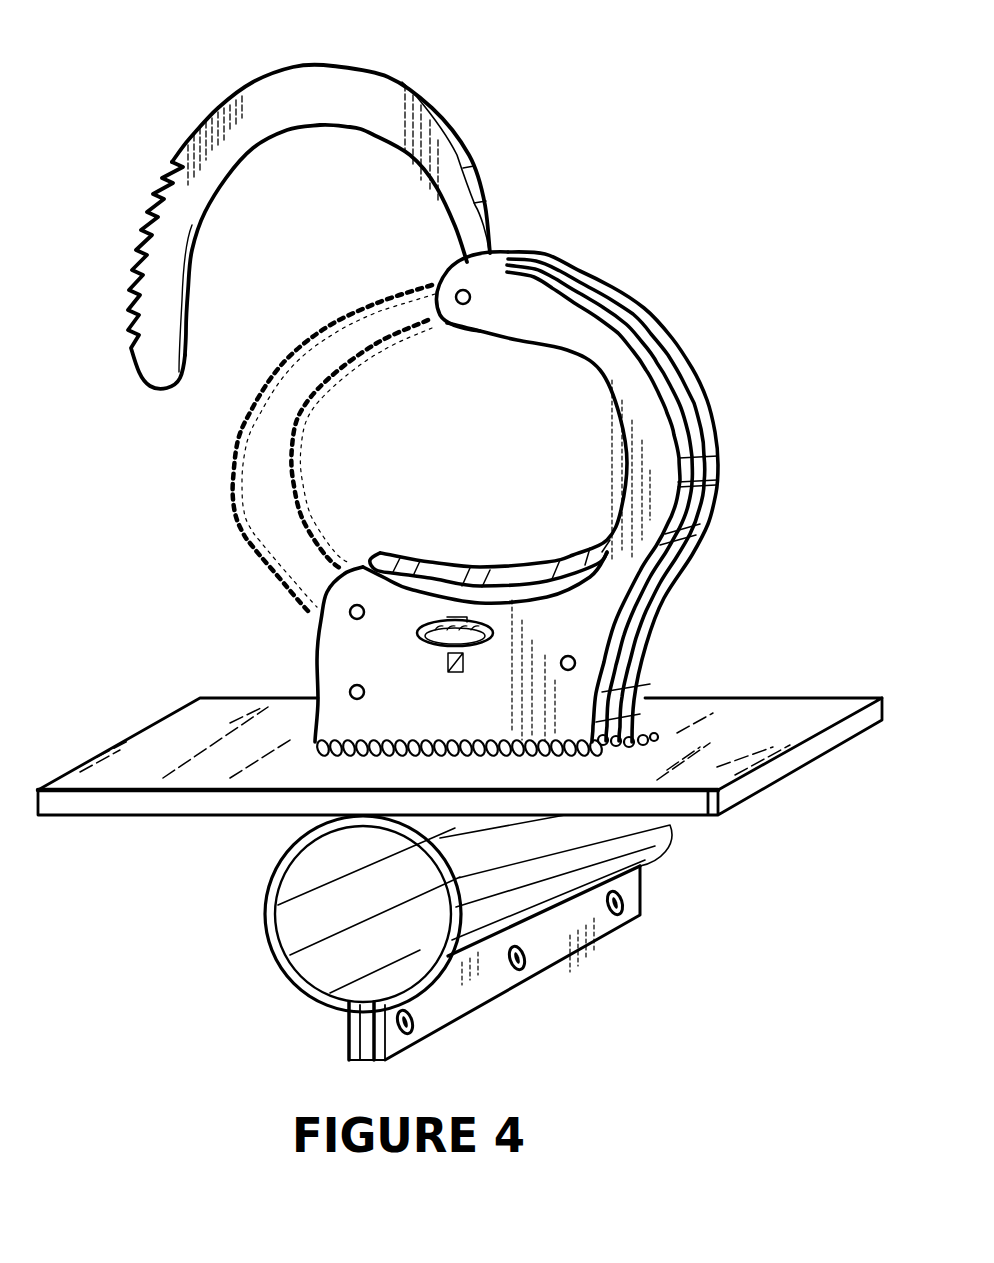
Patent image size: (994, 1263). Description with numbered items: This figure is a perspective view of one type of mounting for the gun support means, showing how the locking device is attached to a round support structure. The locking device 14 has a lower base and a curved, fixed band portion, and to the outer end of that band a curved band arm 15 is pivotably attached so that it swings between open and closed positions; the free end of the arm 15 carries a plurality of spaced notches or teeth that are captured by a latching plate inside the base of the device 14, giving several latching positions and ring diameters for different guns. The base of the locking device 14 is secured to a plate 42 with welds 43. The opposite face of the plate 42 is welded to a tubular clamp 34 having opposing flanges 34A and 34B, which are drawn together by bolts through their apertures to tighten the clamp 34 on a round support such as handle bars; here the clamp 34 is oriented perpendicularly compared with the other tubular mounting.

The locking device 14 is at (720, 487).
The curved band arm 15 is at (334, 84).
The tubular clamp 34 is at (666, 828).
The flange 34A is at (343, 1057).
The flange 34B is at (418, 1028).
The plate 42 is at (652, 735).
The welds 43 is at (300, 740).